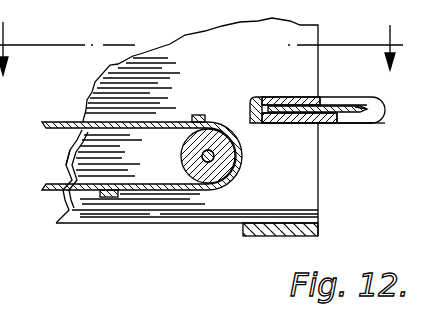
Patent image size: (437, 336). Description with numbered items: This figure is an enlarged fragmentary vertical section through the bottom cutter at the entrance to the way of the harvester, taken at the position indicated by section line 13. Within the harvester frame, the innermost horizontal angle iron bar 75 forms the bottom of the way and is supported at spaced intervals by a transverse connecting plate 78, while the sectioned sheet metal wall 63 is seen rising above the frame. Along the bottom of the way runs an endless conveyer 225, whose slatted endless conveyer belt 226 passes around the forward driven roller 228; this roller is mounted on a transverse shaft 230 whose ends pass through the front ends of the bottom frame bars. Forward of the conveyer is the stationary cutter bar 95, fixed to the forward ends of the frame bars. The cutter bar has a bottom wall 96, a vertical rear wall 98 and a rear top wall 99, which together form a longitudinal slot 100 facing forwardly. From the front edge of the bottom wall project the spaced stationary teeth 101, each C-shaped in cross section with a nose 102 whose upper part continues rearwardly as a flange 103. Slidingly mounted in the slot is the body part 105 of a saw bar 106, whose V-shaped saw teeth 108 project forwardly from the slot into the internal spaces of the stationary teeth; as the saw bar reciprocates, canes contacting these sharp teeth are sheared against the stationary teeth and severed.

The section line 13— 13 is at (201, 41).
The housing wall 63 is at (176, 32).
The horizontal angle iron bar 75 is at (64, 222).
The transverse connecting plate 78 is at (262, 238).
The endless conveyer 225 is at (74, 120).
The slatted endless conveyer belt 226 is at (66, 163).
The transverse shaft 230 is at (184, 156).
The driven roller 228 is at (224, 170).
The vertical rear wall 98 is at (253, 105).
The rear top wall 99 is at (281, 97).
The longitudinal slot 100 is at (270, 97).
The stationary teeth 101 is at (380, 101).
The nose 102 is at (386, 118).
The flange 103 is at (350, 97).
The body part 105 is at (297, 105).
The saw bar 106 is at (322, 106).
The V-shaped saw teeth 108 is at (355, 107).
The bottom wall 96 is at (298, 124).
The stationary cutter bar 95 is at (344, 124).